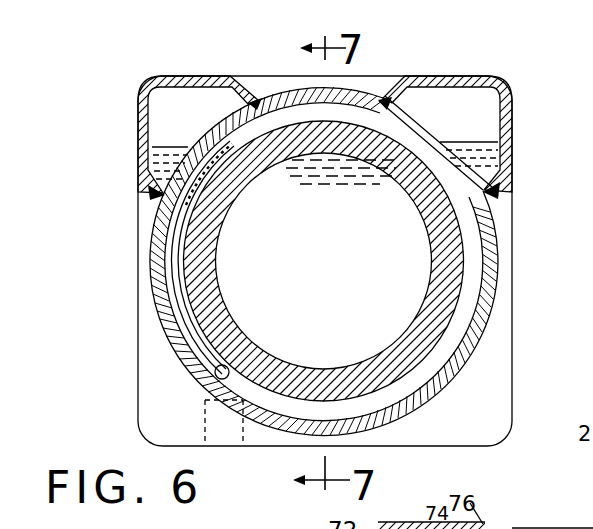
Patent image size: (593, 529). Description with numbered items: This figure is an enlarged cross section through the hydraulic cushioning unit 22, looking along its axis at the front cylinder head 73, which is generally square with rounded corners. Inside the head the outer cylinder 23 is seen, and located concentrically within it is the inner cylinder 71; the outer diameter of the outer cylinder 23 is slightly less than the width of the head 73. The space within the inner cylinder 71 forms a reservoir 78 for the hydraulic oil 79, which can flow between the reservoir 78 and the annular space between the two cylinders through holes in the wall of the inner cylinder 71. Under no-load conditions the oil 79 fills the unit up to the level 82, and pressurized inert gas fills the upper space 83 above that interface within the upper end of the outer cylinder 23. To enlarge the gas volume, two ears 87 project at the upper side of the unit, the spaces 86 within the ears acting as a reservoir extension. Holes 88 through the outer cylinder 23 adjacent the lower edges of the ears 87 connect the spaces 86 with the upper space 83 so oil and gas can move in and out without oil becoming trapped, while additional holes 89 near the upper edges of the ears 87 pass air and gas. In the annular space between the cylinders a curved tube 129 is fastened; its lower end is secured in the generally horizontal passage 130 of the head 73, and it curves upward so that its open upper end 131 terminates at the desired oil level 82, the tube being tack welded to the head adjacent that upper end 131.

The hydraulic cushioning unit 22 is at (126, 248).
The outer cylinder 23 is at (163, 323).
The inner cylinder 71 is at (420, 330).
The front cylinder head 73 is at (511, 377).
The reservoir 78 is at (307, 309).
The hydraulic oil 79 is at (166, 158).
The oil level 82 is at (150, 130).
The upper space 83 is at (330, 125).
The spaces within the ears 86 is at (214, 128).
The ears 87 is at (141, 91).
The holes 88 is at (146, 190).
The additional holes 89 is at (258, 103).
The curved tube 129 is at (173, 281).
The horizontal passage 130 is at (214, 377).
The upper end of the tube 131 is at (233, 145).